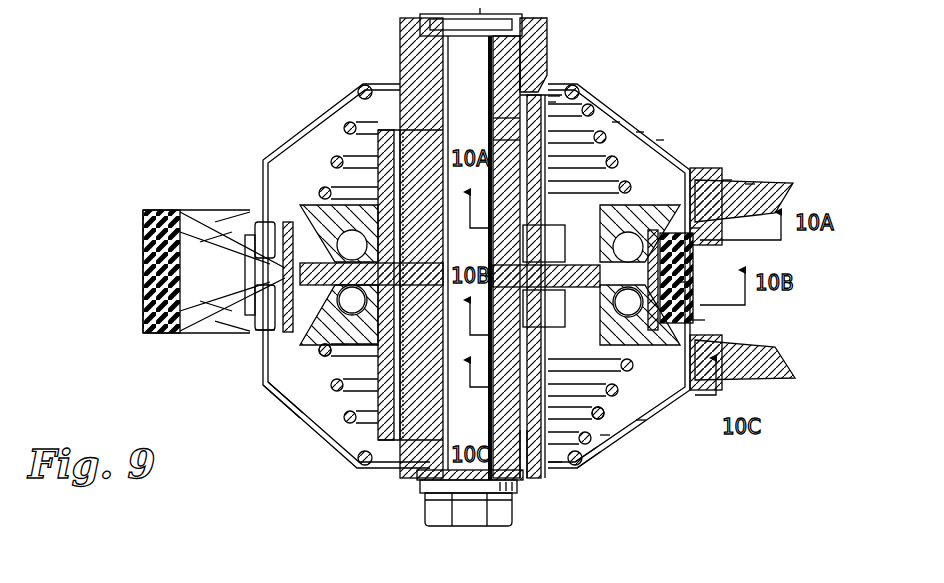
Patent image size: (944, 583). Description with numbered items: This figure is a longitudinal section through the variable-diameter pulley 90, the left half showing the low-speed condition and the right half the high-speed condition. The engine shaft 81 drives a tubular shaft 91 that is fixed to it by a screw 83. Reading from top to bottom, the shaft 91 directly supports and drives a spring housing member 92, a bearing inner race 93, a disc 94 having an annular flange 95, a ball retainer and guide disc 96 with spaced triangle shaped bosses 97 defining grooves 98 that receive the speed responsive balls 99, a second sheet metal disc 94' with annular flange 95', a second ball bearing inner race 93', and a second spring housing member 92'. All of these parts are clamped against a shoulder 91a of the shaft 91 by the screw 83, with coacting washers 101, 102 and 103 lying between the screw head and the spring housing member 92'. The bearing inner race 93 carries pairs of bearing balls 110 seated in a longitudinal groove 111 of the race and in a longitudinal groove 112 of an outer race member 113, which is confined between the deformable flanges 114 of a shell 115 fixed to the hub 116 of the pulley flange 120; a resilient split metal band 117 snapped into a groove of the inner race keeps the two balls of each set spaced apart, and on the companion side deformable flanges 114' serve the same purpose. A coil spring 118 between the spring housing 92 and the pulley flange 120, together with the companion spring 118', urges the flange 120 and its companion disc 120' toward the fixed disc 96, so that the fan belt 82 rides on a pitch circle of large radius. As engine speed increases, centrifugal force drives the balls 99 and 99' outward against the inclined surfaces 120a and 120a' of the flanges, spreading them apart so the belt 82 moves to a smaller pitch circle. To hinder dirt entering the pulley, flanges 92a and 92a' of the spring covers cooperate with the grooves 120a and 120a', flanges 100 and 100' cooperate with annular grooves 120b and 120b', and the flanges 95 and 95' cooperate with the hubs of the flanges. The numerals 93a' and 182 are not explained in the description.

The engine shaft 81 is at (458, 52).
The fan belt 82 is at (143, 242).
The screw 83 is at (440, 514).
The pulley 90 is at (82, 292).
The tubular shaft 91 is at (530, 34).
The shoulder 91a is at (400, 72).
The spring housing member 92 is at (635, 106).
The second spring housing member 92' is at (610, 468).
The flange of spring cover 92a is at (456, 276).
The flange of spring cover 92a' is at (249, 407).
The bearing inner race 93 is at (490, 274).
The second ball bearing inner race 93' is at (490, 326).
The ball race 93a' is at (584, 487).
The disc 94 is at (366, 265).
The sheet metal disc 94' is at (623, 450).
The annular flange 95 is at (472, 225).
The annular flange 95' is at (661, 435).
The ball retainer and guide disc 96 is at (283, 270).
The triangle shaped bosses 97 is at (698, 172).
The grooves 98 is at (730, 180).
The balls 99 is at (772, 169).
The balls 99' is at (724, 323).
The flange 100 is at (725, 228).
The flange 100' is at (710, 282).
The washer 101 is at (420, 474).
The washer 102 is at (423, 485).
The washer 103 is at (425, 495).
The bearing balls 110 is at (618, 122).
The longitudinal groove 111 is at (493, 118).
The longitudinal groove 112 is at (640, 132).
The outer race member 113 is at (660, 140).
The deformable flanges 114 is at (556, 61).
The deformable flanges 114' is at (545, 471).
The shell 115 is at (552, 102).
The hub 116 is at (600, 90).
The resilient split metal band 117 is at (493, 140).
The coil spring 118 is at (468, 261).
The coil spring 118' is at (464, 427).
The pulley flange 120 is at (474, 188).
The companion disc 120' is at (476, 357).
The inclined surface 120a is at (236, 193).
The inclined surface 120a' is at (221, 348).
The annular groove 120b is at (206, 255).
The annular groove 120b' is at (216, 359).
The right cone member 182 is at (700, 245).